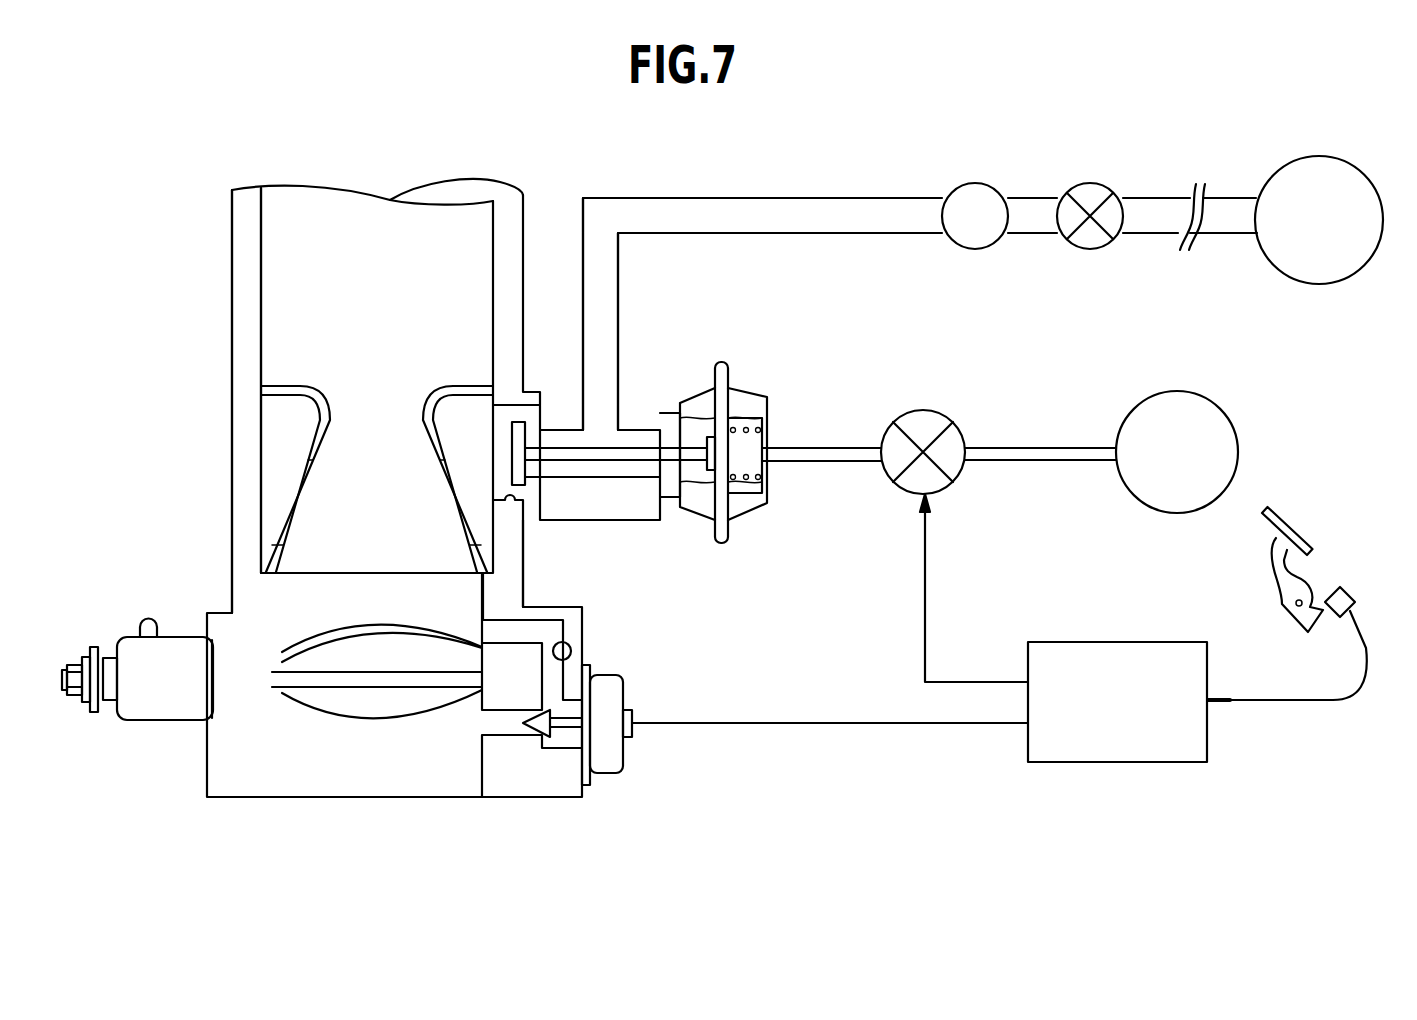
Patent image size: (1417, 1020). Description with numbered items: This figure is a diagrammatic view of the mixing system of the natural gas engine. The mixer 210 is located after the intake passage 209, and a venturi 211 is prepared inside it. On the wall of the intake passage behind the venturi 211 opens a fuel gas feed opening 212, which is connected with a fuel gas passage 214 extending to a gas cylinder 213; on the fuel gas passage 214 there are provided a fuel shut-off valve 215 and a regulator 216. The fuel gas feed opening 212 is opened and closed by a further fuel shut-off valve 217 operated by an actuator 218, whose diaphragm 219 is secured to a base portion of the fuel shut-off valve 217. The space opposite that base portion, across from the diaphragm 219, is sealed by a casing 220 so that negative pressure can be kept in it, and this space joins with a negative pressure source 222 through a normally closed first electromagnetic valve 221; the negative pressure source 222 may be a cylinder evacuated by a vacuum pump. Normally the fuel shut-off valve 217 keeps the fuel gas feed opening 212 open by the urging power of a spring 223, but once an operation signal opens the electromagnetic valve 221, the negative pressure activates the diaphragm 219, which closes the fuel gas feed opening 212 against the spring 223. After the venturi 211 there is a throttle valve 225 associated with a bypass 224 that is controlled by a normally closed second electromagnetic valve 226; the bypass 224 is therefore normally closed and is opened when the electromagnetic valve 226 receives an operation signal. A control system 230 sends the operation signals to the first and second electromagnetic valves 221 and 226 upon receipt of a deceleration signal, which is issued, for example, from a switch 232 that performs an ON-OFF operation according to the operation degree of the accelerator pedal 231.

The intake passage 209 is at (232, 293).
The mixer 210 is at (232, 519).
The venturi 211 is at (313, 447).
The fuel gas feed opening 212 is at (528, 505).
The gas cylinder 213 is at (1300, 160).
The fuel gas passage 214 is at (822, 200).
The fuel shut-off valve 215 is at (1090, 183).
The regulator 216 is at (978, 185).
The fuel shut-off valve 217 is at (523, 476).
The actuator 218 is at (742, 386).
The diaphragm 219 is at (712, 472).
The actuator housing 220 is at (768, 503).
The first electromagnetic valve 221 is at (960, 418).
The negative pressure source 222 is at (1232, 418).
The spring 223 is at (770, 433).
The bypass 224 is at (582, 653).
The throttle valve 225 is at (370, 718).
The second electromagnetic valve 226 is at (598, 775).
The control system 230 is at (1128, 642).
The accelerator pedal 231 is at (1283, 522).
The switch 232 is at (1337, 582).